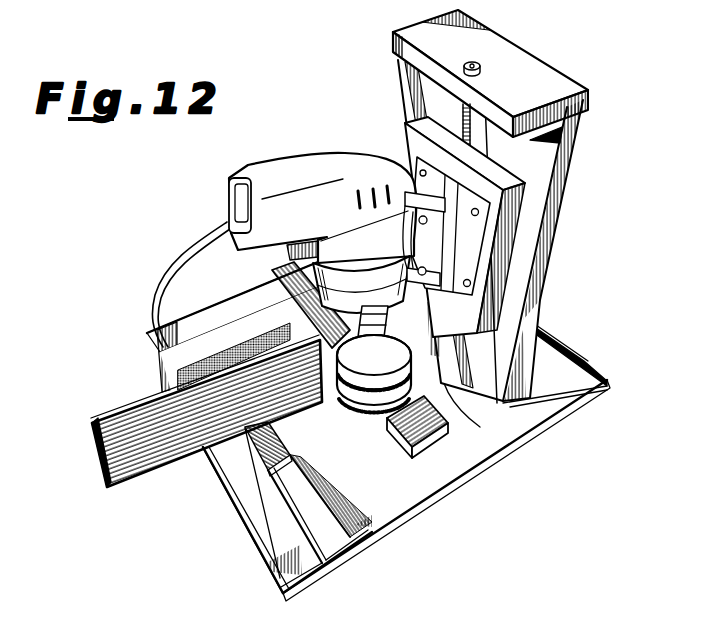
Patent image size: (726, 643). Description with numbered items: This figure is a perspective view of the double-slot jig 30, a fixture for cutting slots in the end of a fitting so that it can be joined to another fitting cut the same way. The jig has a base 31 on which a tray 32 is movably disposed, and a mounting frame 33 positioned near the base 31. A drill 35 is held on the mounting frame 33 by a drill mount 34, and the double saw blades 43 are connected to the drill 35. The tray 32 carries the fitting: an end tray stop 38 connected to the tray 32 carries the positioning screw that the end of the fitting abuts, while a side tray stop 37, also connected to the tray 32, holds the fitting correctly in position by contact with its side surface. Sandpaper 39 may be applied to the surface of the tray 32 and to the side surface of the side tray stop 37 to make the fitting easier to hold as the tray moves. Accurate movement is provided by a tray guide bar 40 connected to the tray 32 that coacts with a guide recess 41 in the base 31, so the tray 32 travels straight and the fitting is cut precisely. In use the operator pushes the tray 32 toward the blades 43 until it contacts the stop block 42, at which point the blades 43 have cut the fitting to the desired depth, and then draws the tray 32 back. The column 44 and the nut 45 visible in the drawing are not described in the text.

The double-slot jig 30 is at (281, 110).
The base 31 is at (477, 443).
The tray 32 is at (156, 340).
The mounting frame 33 is at (393, 52).
The drill mount 34 is at (400, 168).
The drill 35 is at (247, 165).
The side tray stop 37 is at (183, 435).
The end tray stop 38 is at (270, 283).
The sandpaper 39 is at (170, 367).
The tray guide bar 40 is at (260, 458).
The guide recess 41 is at (303, 503).
The stop block 42 is at (427, 443).
The blades 43 is at (372, 382).
The upright column 44 is at (452, 382).
The adjusting nut 45 is at (481, 65).